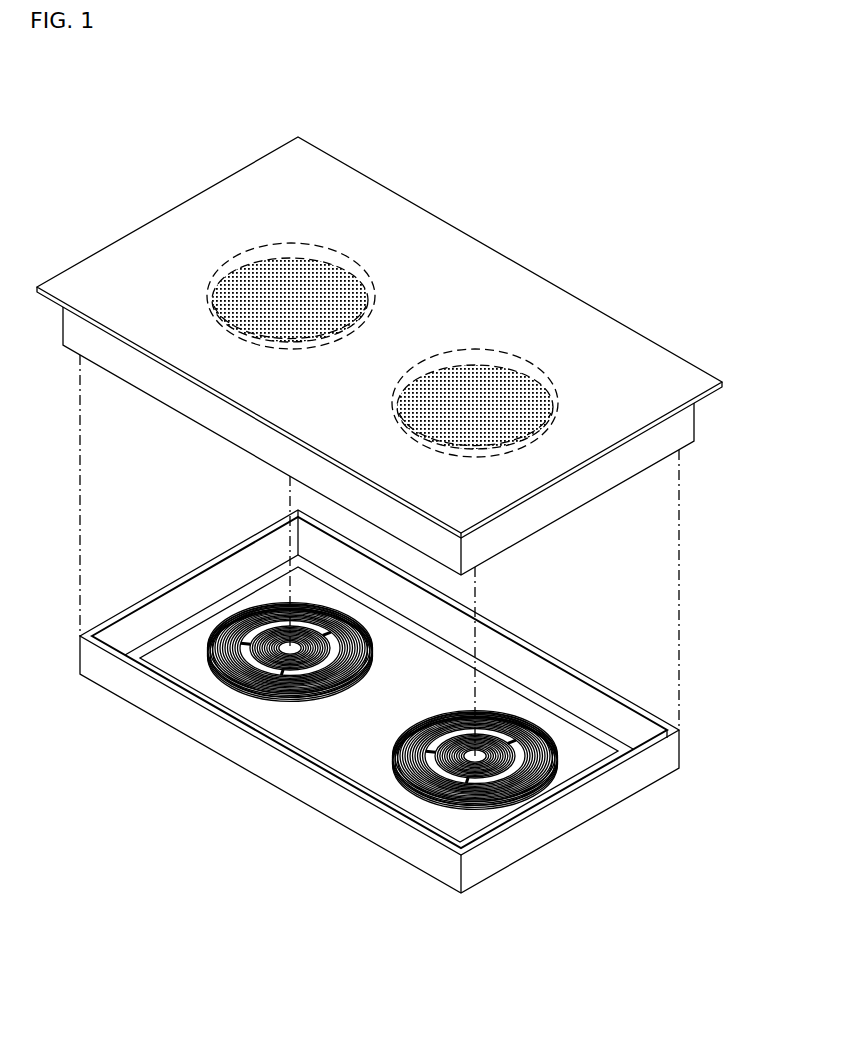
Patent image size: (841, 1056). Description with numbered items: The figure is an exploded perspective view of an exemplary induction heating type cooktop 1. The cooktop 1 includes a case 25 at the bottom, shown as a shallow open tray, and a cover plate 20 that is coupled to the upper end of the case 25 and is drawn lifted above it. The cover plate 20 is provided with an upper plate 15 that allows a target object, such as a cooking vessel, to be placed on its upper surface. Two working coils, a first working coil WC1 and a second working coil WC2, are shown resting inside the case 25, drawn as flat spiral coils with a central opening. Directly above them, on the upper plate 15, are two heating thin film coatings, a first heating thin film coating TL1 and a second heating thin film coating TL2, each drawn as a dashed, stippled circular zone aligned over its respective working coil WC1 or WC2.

The induction heating type cooktop 1 is at (135, 76).
The upper plate 15 is at (618, 355).
The cover plate 20 is at (688, 334).
The case 25 is at (582, 813).
The first heating thin film coating TL1 is at (238, 273).
The second heating thin film coating TL2 is at (475, 368).
The first working coil WC1 is at (245, 692).
The second working coil WC2 is at (428, 792).